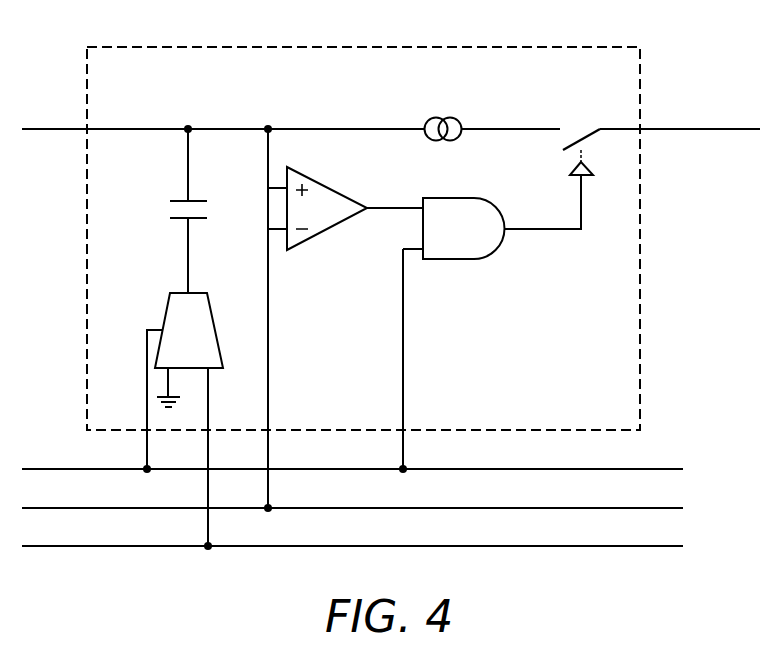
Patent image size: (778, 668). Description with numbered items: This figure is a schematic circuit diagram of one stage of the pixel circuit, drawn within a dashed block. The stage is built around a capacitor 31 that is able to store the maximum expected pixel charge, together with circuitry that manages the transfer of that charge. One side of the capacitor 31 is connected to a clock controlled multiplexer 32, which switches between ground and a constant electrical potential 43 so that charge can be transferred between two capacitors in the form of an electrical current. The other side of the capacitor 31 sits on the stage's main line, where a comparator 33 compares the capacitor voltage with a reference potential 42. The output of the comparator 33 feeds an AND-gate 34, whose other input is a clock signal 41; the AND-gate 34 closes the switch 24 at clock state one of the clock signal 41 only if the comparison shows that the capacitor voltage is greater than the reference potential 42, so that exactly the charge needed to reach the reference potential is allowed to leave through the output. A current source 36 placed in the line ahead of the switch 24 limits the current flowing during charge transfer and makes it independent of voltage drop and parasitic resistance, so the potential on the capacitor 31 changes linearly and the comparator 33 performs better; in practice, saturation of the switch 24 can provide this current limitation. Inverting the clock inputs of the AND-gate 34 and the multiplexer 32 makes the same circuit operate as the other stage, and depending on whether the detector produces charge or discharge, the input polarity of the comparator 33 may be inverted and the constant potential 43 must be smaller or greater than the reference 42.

The switch 24 is at (590, 128).
The capacitor 31 is at (170, 202).
The clock controlled multiplexer 32 is at (166, 304).
The comparator 33 is at (318, 237).
The AND-gate 34 is at (493, 252).
The current source 36 is at (426, 120).
The clock signal 41 is at (717, 478).
The reference potential 42 is at (717, 517).
The constant electrical potential 43 is at (717, 555).